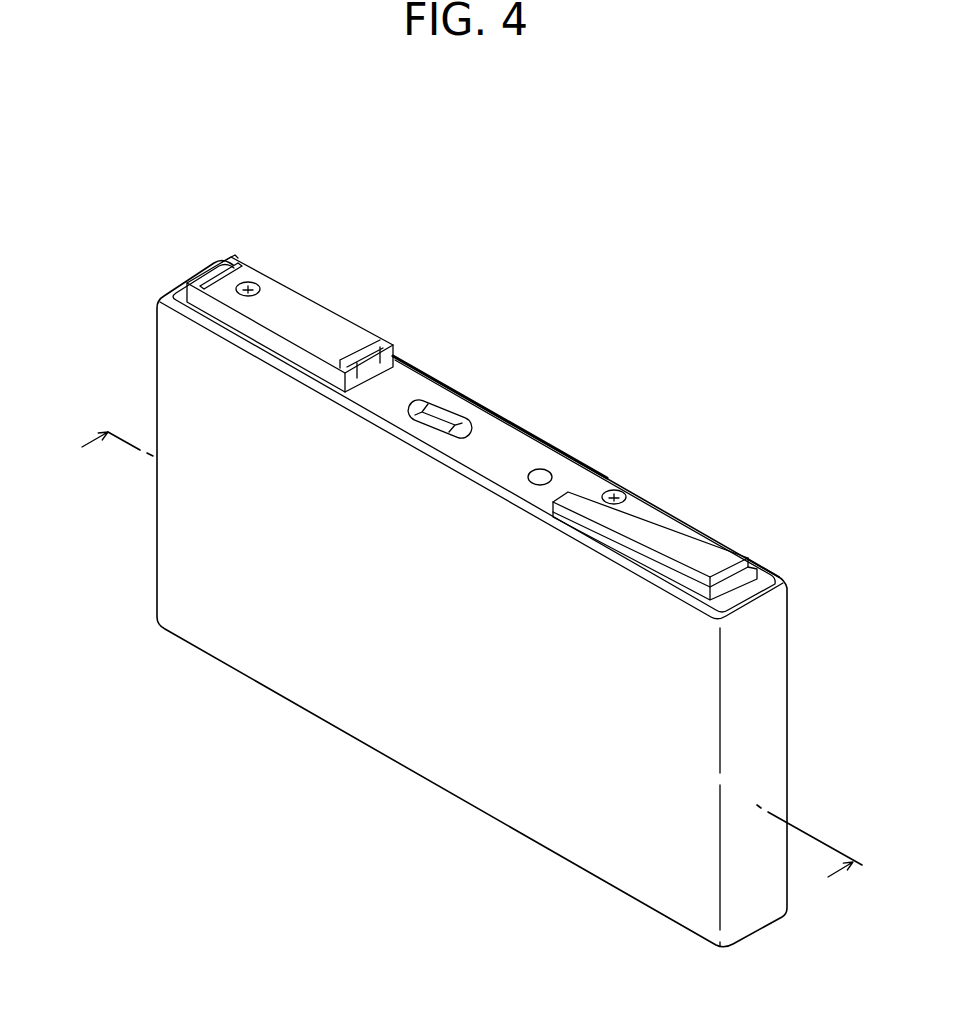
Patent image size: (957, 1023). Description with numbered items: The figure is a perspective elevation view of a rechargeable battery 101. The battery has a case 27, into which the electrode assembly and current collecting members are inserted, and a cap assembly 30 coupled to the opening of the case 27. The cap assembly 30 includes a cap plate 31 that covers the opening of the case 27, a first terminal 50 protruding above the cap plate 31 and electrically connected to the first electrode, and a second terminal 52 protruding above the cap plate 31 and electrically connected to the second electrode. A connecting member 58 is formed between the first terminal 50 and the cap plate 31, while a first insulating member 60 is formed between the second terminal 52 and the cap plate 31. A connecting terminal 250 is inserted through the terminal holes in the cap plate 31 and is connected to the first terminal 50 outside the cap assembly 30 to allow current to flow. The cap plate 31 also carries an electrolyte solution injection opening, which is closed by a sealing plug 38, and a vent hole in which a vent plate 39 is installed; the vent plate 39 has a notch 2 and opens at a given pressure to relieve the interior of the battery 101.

The rechargeable battery 101 is at (523, 182).
The case 27 is at (380, 717).
The cap assembly 30 is at (512, 415).
The cap plate 31 is at (405, 377).
The sealing plug 38 is at (542, 473).
The vent plate 39 is at (433, 398).
The notch 2 is at (445, 418).
The first terminal 50 is at (702, 547).
The second terminal 52 is at (287, 302).
The connecting member 58 is at (747, 557).
The first insulating member 60 is at (355, 319).
The connecting terminal 250 is at (248, 282).